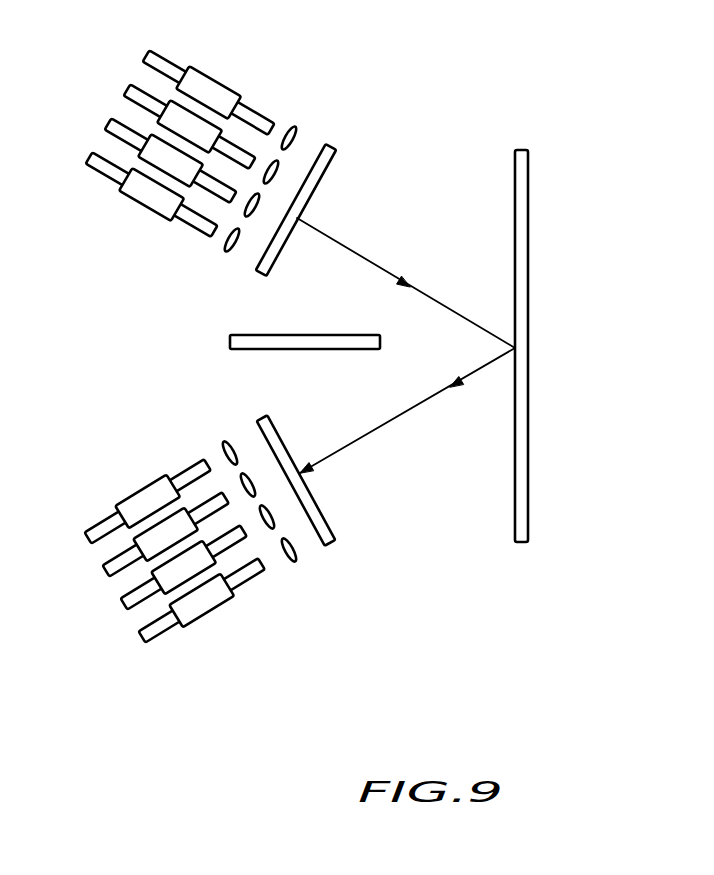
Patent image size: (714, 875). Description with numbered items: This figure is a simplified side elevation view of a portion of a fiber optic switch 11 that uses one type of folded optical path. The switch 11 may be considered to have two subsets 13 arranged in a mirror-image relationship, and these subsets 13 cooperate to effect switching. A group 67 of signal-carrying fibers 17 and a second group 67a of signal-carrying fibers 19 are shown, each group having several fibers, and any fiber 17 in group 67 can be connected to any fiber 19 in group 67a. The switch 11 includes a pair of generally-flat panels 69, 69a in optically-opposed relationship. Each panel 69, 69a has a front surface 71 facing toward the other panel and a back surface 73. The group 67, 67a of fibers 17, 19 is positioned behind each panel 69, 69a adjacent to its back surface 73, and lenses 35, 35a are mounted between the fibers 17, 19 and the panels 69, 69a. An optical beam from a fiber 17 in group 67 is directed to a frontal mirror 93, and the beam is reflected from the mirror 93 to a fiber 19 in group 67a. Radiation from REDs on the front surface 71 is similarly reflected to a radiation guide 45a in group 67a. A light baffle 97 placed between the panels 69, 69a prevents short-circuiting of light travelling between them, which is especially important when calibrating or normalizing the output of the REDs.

The fiber optic switch 11 is at (98, 387).
The subsets 13 is at (108, 265).
The signal-carrying fibers 17 is at (90, 98).
The signal-carrying fibers 19 is at (257, 612).
The lens 35 is at (295, 128).
The lens 35a is at (297, 561).
The radiation guide 45a is at (211, 466).
The group of optical fibers 67 is at (268, 82).
The group of optical fibers 67a is at (175, 452).
The panel 69 is at (332, 145).
The panel 69a is at (337, 545).
The front surface 71 is at (282, 247).
The back surface 73 is at (253, 264).
The frontal mirror 93 is at (528, 365).
The light baffle 97 is at (323, 335).